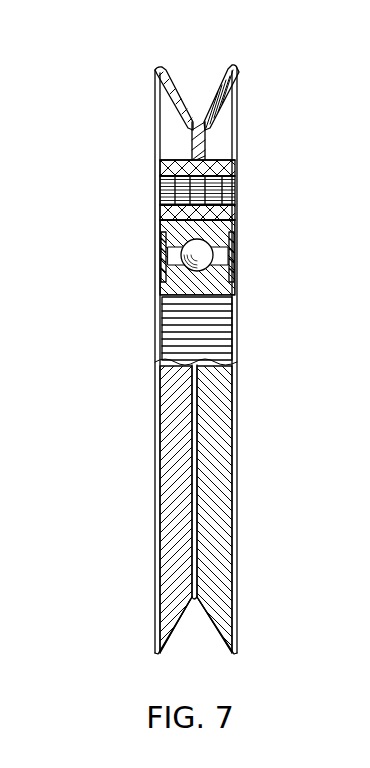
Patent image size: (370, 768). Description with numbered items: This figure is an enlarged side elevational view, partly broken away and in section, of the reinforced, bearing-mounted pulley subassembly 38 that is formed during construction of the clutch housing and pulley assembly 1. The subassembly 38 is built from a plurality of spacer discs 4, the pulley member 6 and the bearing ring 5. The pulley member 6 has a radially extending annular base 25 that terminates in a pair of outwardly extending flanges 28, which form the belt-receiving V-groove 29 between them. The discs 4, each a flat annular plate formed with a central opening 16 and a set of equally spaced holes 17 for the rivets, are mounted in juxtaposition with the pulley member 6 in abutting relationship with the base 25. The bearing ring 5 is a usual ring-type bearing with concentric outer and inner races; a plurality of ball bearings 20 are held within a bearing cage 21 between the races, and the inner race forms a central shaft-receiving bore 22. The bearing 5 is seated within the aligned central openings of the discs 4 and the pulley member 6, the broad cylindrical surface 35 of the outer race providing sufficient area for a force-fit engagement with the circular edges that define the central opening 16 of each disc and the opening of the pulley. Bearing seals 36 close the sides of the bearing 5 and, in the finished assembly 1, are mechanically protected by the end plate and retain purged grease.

The clutch housing and pulley assembly 1 is at (137, 78).
The pulley subassembly 38 is at (142, 128).
The spacer discs 4 is at (166, 167).
The flanges 28 is at (218, 112).
The base 25 is at (206, 138).
The central opening 16 is at (166, 214).
The holes 17 is at (238, 197).
The bearing ring 5 is at (162, 244).
The cylindrical surface 35 is at (236, 226).
The bearing seals 36 is at (164, 258).
The ball bearings 20 is at (182, 268).
The bearing cage 21 is at (236, 280).
The shaft-receiving bore 22 is at (180, 308).
The pulley member 6 is at (180, 464).
The belt-receiving V-groove 29 is at (176, 626).